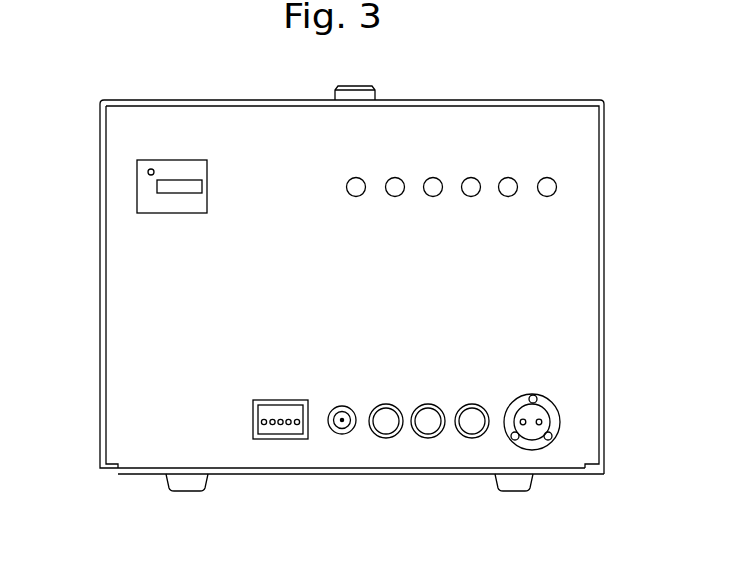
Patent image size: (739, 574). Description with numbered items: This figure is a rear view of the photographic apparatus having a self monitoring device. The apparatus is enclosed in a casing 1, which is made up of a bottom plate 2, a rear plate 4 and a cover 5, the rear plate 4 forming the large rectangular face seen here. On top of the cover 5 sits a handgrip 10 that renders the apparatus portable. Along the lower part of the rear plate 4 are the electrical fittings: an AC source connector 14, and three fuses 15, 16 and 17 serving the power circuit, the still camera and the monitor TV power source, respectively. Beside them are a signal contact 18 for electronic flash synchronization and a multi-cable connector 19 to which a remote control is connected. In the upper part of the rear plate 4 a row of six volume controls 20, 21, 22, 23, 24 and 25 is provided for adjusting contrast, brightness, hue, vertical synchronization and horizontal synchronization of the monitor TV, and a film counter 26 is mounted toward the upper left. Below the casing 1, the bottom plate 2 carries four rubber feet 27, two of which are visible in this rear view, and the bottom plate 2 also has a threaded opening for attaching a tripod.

The casing 1 is at (87, 110).
The bottom plate 2 is at (148, 474).
The rear plate 4 is at (583, 274).
The cover 5 is at (605, 162).
The handgrip 10 is at (370, 86).
The AC source connector 14 is at (544, 414).
The fuse 15 is at (473, 438).
The fuse 16 is at (430, 438).
The fuse 17 is at (385, 438).
The signal contact 18 is at (343, 434).
The multi-cable connector 19 is at (277, 431).
The volume control 20 is at (356, 197).
The volume control 21 is at (395, 197).
The volume control 22 is at (433, 197).
The volume control 23 is at (471, 197).
The volume control 24 is at (508, 197).
The volume control 25 is at (547, 197).
The film counter 26 is at (145, 192).
The rubber feet 27 is at (187, 483).